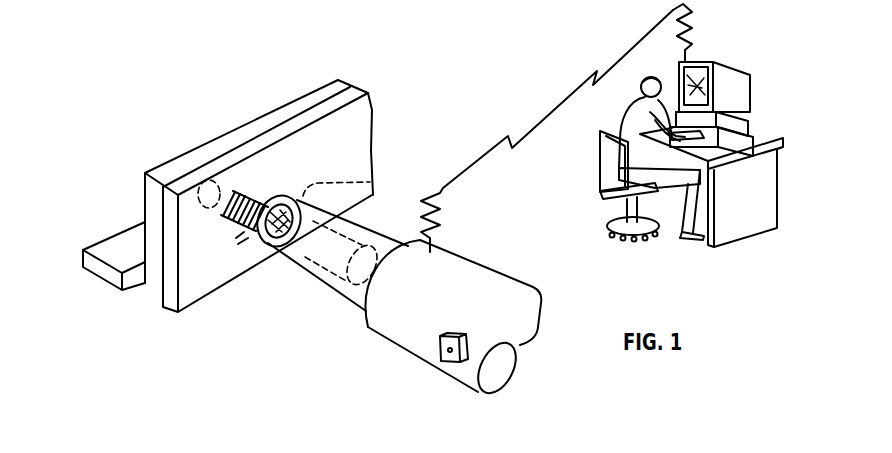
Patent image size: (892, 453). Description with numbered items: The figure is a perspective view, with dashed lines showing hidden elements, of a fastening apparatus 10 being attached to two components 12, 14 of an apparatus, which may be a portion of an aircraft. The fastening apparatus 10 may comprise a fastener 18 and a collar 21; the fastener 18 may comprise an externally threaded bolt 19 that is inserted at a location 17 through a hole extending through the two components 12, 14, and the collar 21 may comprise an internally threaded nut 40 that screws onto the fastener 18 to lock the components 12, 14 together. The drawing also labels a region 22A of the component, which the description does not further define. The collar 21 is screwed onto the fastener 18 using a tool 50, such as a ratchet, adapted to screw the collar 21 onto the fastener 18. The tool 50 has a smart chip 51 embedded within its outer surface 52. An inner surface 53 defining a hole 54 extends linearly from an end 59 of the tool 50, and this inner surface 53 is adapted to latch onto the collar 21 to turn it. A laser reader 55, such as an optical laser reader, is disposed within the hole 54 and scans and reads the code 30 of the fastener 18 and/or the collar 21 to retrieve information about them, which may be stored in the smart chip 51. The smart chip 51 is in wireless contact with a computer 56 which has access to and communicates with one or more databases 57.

The fastening apparatus 10 is at (240, 229).
The component 12 is at (338, 79).
The component 14 is at (373, 109).
The location 17 is at (222, 185).
The fastener 18 is at (228, 127).
The externally threaded bolt 19 is at (230, 190).
The collar 21 is at (264, 232).
The top surface of bracket 22A is at (190, 166).
The code 30 is at (300, 258).
The internally threaded nut 40 is at (238, 245).
The tool 50 is at (398, 336).
The smart chip 51 is at (471, 392).
The outer surface 52 is at (447, 372).
The inner surface 53 is at (371, 166).
The hole 54 is at (370, 182).
The laser reader 55 is at (328, 257).
The computer 56 is at (739, 92).
The database 57 is at (705, 62).
The end 59 is at (271, 210).